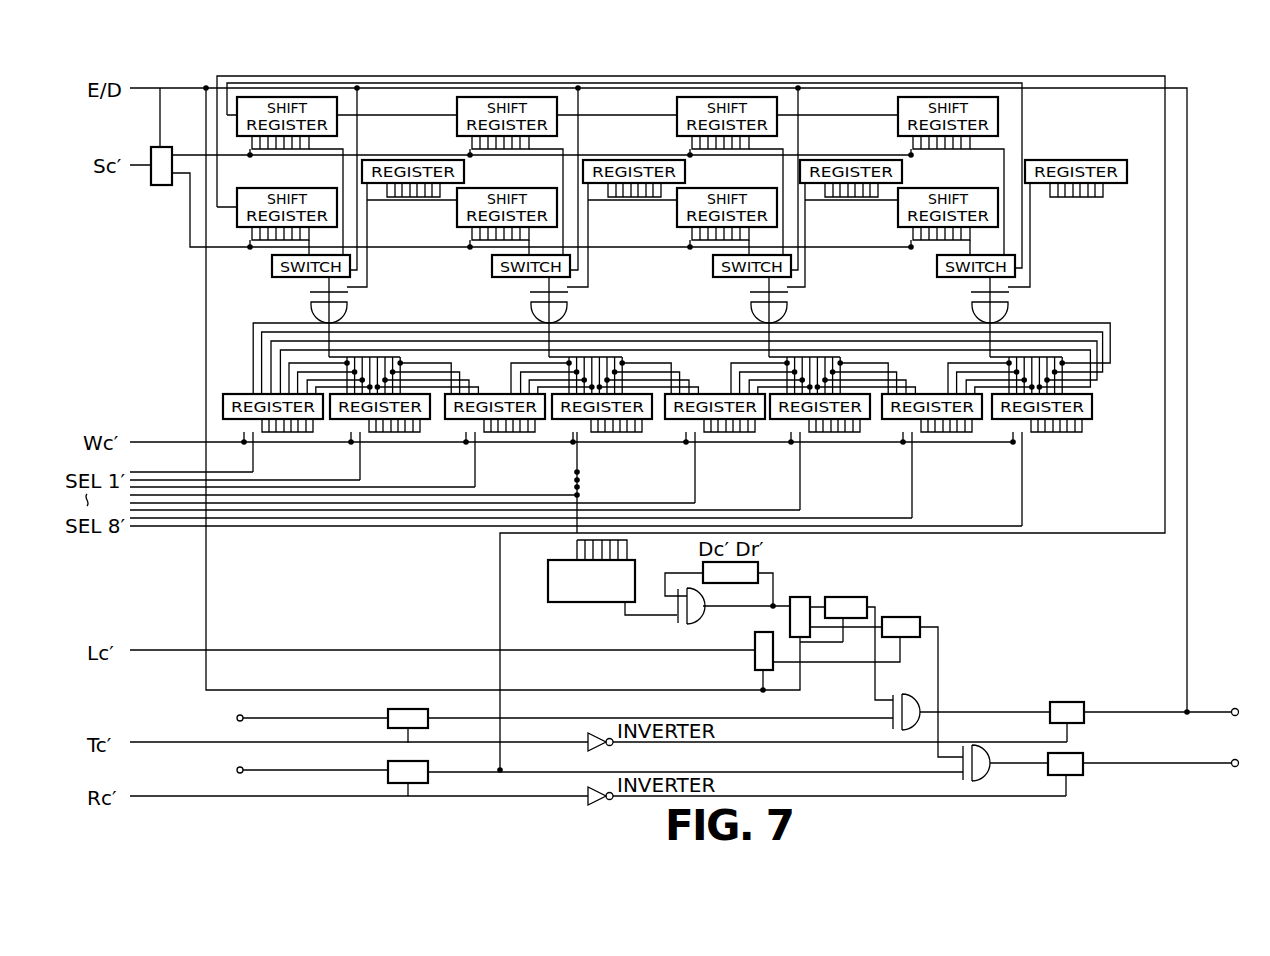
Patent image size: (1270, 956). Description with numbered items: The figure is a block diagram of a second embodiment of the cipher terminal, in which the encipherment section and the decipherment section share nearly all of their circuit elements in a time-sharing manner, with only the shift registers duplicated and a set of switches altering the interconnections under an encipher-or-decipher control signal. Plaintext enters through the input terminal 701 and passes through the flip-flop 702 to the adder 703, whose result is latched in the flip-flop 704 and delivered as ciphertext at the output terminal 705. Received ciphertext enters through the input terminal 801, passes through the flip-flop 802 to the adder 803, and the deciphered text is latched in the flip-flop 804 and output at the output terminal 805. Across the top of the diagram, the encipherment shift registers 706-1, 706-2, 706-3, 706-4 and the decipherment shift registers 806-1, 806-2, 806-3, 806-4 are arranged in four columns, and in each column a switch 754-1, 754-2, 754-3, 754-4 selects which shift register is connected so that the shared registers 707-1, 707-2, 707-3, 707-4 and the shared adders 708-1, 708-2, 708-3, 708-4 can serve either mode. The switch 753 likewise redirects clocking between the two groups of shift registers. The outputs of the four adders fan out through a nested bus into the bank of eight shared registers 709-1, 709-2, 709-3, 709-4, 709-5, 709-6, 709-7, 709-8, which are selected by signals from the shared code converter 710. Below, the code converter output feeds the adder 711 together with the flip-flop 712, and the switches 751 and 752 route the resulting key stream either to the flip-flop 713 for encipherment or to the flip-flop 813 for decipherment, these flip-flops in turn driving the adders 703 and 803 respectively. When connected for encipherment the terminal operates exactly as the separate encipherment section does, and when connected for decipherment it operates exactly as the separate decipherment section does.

The input terminal 701 is at (236, 718).
The flip-flop 702 is at (390, 709).
The adder 703 is at (910, 693).
The flip-flop 704 is at (1073, 702).
The output terminal 705 is at (1233, 708).
The shift register 706-1 is at (338, 118).
The shift register 706-2 is at (557, 118).
The shift register 706-3 is at (777, 118).
The shift register 706-4 is at (998, 115).
The register 707-1 is at (464, 172).
The register 707-2 is at (687, 172).
The register 707-3 is at (903, 172).
The register 707-4 is at (1050, 159).
The adder 708-1 is at (347, 308).
The adder 708-2 is at (568, 308).
The adder 708-3 is at (788, 308).
The adder 708-4 is at (1008, 305).
The register 709-1 is at (322, 433).
The register 709-2 is at (428, 433).
The register 709-3 is at (545, 433).
The register 709-4 is at (648, 433).
The register 709-5 is at (760, 433).
The register 709-6 is at (865, 433).
The register 709-7 is at (978, 433).
The register 709-8 is at (1085, 433).
The code converter 710 is at (548, 582).
The adder 711 is at (682, 622).
The flip-flop 712 is at (758, 568).
The flip-flop 713 is at (857, 587).
The switch 751 is at (755, 662).
The switch 752 is at (803, 640).
The switch 753 is at (157, 185).
The switch 754-1 is at (272, 272).
The switch 754-2 is at (492, 268).
The switch 754-3 is at (713, 268).
The switch 754-4 is at (937, 268).
The input terminal 801 is at (236, 770).
The flip-flop 802 is at (390, 783).
The adder 803 is at (977, 747).
The flip-flop 804 is at (1073, 753).
The output terminal 805 is at (1233, 760).
The shift register 806-1 is at (240, 188).
The shift register 806-2 is at (457, 210).
The shift register 806-3 is at (677, 210).
The shift register 806-4 is at (898, 210).
The flip-flop 813 is at (905, 617).